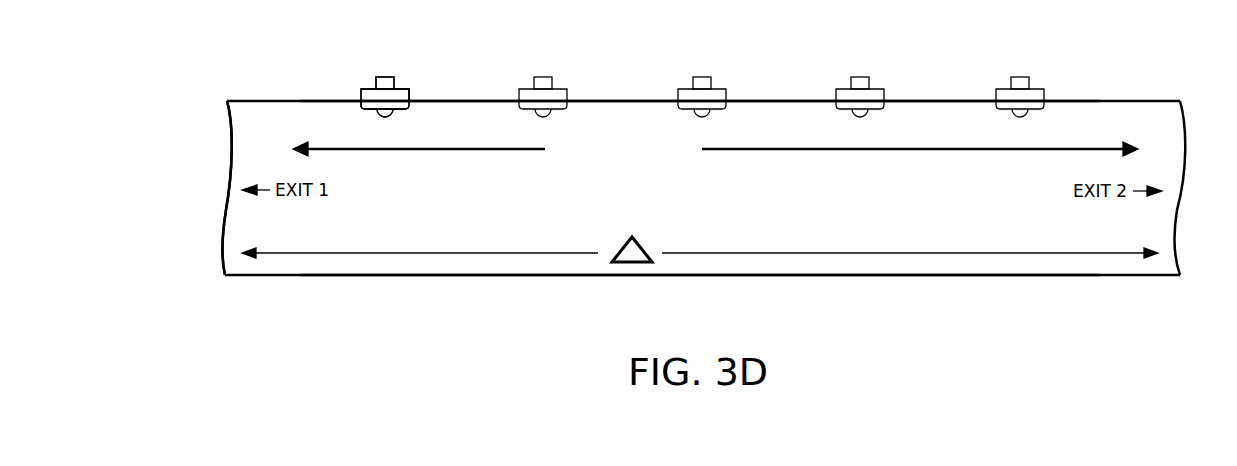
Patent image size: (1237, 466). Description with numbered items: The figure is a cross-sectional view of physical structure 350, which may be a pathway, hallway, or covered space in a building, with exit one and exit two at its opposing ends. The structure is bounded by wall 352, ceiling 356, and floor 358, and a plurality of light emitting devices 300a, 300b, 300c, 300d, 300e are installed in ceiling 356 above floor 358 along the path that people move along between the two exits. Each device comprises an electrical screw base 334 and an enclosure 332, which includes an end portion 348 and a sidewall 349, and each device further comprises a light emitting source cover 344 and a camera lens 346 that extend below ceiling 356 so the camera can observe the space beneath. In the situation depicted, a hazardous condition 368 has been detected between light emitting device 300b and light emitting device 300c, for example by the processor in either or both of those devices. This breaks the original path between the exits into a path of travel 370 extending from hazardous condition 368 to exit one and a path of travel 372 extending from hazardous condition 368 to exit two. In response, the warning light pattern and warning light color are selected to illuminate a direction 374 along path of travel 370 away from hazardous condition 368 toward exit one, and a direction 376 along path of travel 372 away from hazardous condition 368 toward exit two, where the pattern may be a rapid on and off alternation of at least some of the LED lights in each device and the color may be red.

The light emitting device 300a is at (383, 58).
The light emitting device 300b is at (543, 60).
The light emitting device 300c is at (703, 60).
The light emitting device 300d is at (860, 60).
The light emitting device 300e is at (1020, 60).
The enclosure 332 is at (352, 94).
The electrical screw base 334 is at (394, 83).
The light emitting source cover 344 is at (362, 104).
The camera lens 346 is at (389, 114).
The end portion 348 is at (371, 89).
The sidewall 349 is at (410, 97).
The physical structure 350 is at (1164, 49).
The wall 352 is at (268, 117).
The ceiling 356 is at (633, 99).
The floor 358 is at (446, 277).
The hazardous condition 368 is at (623, 252).
The path of travel 370 is at (534, 251).
The path of travel 372 is at (729, 251).
The direction 374 is at (452, 151).
The direction 376 is at (880, 151).